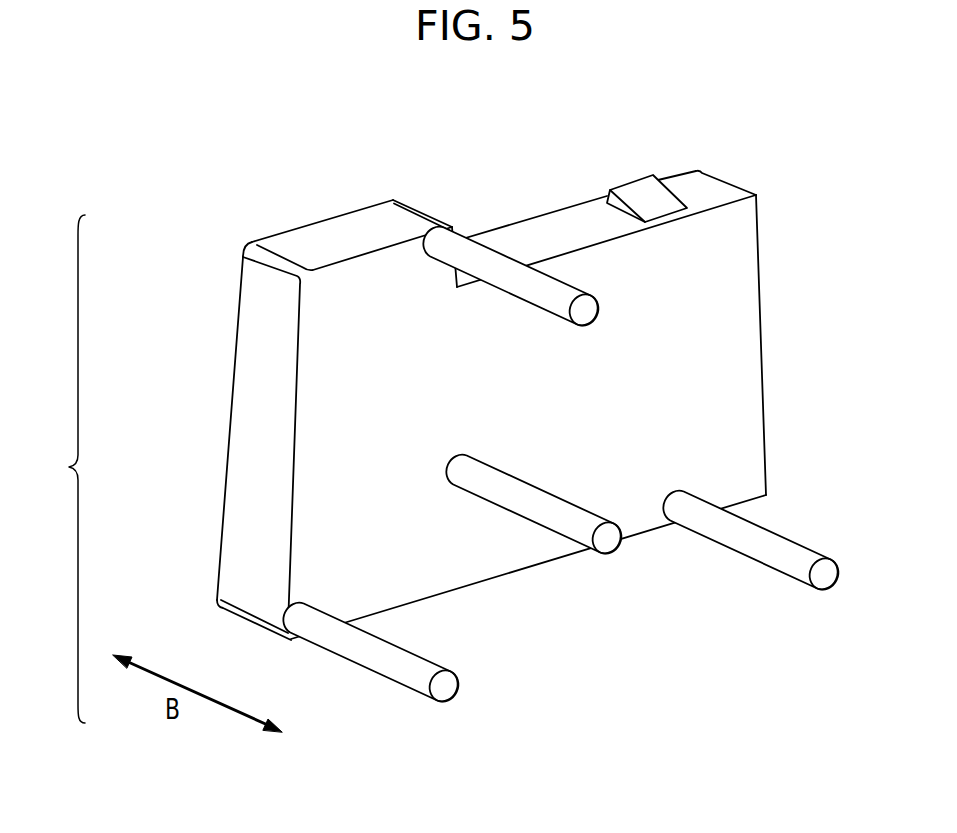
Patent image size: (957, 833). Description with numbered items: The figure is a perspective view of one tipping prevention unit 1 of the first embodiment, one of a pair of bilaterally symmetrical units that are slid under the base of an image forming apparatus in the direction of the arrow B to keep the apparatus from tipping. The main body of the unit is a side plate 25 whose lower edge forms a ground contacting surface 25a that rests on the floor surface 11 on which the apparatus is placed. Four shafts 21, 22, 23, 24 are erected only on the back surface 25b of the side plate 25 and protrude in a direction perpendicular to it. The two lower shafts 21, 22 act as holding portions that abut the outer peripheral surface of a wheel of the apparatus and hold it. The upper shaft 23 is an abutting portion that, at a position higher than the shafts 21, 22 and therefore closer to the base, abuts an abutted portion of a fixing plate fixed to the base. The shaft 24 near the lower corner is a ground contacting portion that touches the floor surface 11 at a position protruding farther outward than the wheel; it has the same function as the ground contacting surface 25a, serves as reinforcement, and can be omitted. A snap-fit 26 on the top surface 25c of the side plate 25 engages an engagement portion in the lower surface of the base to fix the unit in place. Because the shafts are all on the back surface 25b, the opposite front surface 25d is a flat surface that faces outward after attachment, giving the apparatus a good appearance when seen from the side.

The tipping prevention unit 1 is at (64, 469).
The floor surface 11 is at (597, 641).
The shaft 21 is at (610, 540).
The shaft 22 is at (822, 575).
The shaft 23 is at (588, 311).
The shaft 24 is at (442, 692).
The side plate 25 is at (494, 397).
The ground contacting surface 25a is at (425, 602).
The back surface 25b is at (707, 302).
The top surface 25c is at (546, 232).
The front surface 25d is at (241, 307).
The snap-fit 26 is at (640, 188).